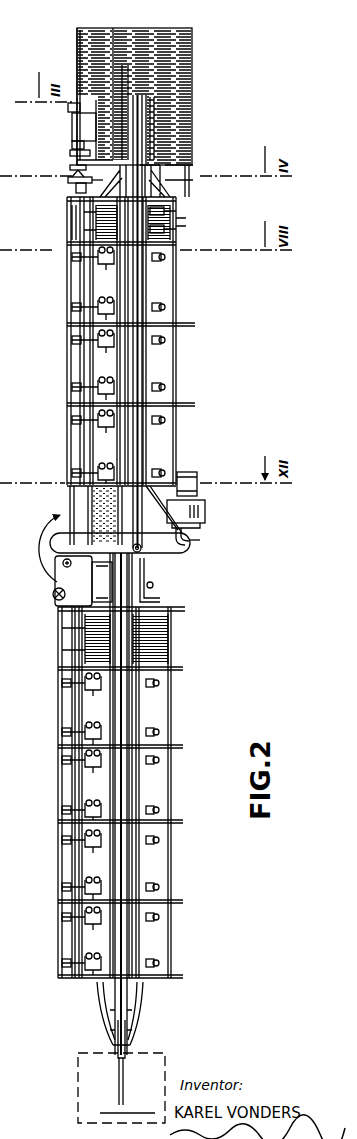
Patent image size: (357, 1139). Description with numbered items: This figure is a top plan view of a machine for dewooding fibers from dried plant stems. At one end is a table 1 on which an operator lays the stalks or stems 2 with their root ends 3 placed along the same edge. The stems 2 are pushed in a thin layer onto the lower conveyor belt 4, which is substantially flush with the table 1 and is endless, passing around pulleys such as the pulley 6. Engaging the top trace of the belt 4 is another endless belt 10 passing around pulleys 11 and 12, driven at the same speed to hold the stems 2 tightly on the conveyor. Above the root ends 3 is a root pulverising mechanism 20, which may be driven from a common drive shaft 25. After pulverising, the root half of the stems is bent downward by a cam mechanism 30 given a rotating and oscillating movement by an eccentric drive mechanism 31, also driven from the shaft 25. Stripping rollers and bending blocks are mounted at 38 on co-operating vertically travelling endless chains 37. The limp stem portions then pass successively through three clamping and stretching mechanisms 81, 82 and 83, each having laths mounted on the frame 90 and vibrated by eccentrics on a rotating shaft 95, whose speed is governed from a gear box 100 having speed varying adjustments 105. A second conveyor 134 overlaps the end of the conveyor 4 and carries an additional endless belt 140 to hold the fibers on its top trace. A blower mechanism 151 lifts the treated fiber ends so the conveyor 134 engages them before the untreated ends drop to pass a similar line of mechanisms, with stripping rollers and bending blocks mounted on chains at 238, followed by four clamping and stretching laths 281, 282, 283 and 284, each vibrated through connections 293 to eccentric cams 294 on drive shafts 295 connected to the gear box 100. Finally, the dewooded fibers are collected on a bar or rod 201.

The table 1 is at (168, 29).
The stalks or stems 2 is at (136, 29).
The root ends 3 is at (78, 33).
The lower conveyor belt 4 is at (151, 127).
The pulley 6 is at (176, 98).
The endless belt 10 is at (144, 273).
The pulley 11 is at (178, 171).
The pulley 12 is at (152, 605).
The root pulverising mechanism 20 is at (72, 126).
The common drive shaft 25 is at (78, 234).
The cam mechanism 30 is at (68, 182).
The eccentric drive mechanism 31 is at (68, 168).
The vertically travelling endless chains 37 is at (176, 206).
The rollers and bending blocks mounting location 38 is at (187, 222).
The clamping and stretching mechanism 81 is at (113, 297).
The clamping and stretching mechanism 82 is at (115, 376).
The clamping and stretching mechanism 83 is at (115, 458).
The frame 90 is at (68, 362).
The rotating shaft 95 is at (77, 287).
The gear box 100 is at (83, 581).
The speed varying adjustments 105 is at (52, 588).
The conveyor 134 is at (125, 1037).
The additional endless belt 140 is at (126, 702).
The blower mechanism 151 is at (211, 506).
The bar or rod 201 is at (119, 1083).
The stripping rollers and bending blocks mounting location 238 is at (179, 648).
The clamping and stretching lath 281 is at (108, 713).
The clamping and stretching lath 282 is at (100, 782).
The clamping and stretching lath 283 is at (100, 862).
The clamping and stretching means 284 is at (100, 936).
The connections 293 is at (70, 771).
The eccentric cams 294 is at (64, 687).
The drive shafts 295 is at (68, 646).